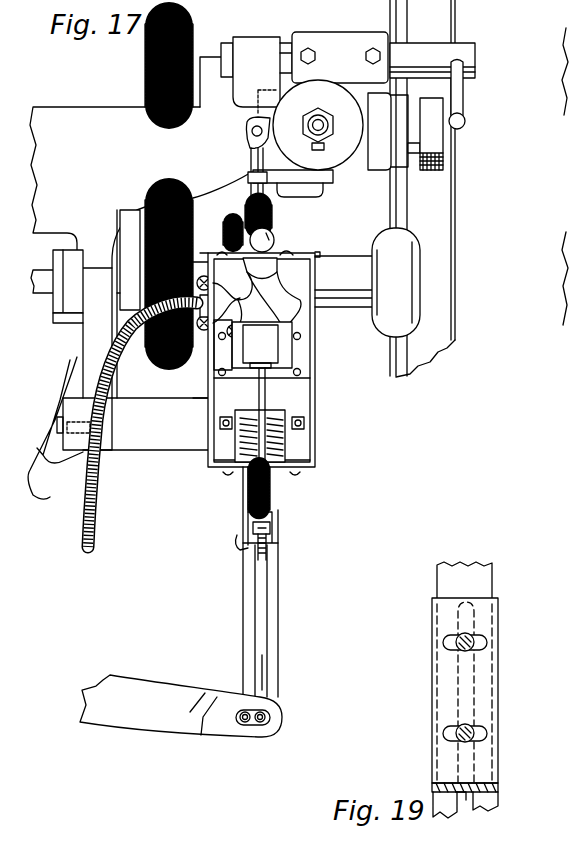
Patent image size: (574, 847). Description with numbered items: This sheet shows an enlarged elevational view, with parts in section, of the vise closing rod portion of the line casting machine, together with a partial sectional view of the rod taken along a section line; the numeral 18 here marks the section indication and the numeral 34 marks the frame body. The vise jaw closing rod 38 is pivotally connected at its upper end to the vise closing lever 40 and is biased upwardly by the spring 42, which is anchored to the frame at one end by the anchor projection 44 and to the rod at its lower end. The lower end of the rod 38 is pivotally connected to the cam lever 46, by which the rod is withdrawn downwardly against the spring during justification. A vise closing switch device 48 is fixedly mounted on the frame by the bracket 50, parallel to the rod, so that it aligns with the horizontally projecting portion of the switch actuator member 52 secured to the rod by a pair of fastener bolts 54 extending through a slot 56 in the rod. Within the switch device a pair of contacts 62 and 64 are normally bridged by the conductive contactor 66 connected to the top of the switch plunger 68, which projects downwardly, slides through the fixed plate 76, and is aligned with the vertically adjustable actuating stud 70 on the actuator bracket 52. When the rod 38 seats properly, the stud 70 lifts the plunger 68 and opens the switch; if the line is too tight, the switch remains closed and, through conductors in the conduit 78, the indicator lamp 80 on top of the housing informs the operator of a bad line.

In FIG. 17, the section line 18- 18 is at (282, 80).
In FIG. 17, the frame body 34 is at (105, 127).
In FIG. 17, the vise closing lever 40 is at (266, 116).
In FIG. 17, the anchor projection 44 is at (246, 177).
In FIG. 17, the spring 42 is at (269, 213).
In FIG. 17, the indicator lamp 80 is at (283, 233).
In FIG. 17, the contact 64 is at (233, 349).
In FIG. 17, the conductive contactor 66 is at (265, 368).
In FIG. 17, the contact 62 is at (287, 345).
In FIG. 17, the switch plunger 68 is at (266, 393).
In FIG. 17, the fixed plate 76 is at (234, 409).
In FIG. 17, the vise closing switch device 48 is at (320, 424).
In FIG. 17, the bracket 50 is at (151, 423).
In FIG. 17, the conduit 78 is at (95, 497).
In FIG. 17, the vise jaw closing rod 38 is at (243, 503).
In FIG. 17, the switch actuator member 52 is at (275, 522).
In FIG. 19, the switch actuator member 52 is at (486, 752).
In FIG. 17, the actuating stud 70 is at (271, 528).
In FIG. 17, the cam lever 46 is at (155, 707).
In FIG. 19, the fastener bolts 54 is at (476, 648).
In FIG. 19, the slot 56 is at (462, 796).